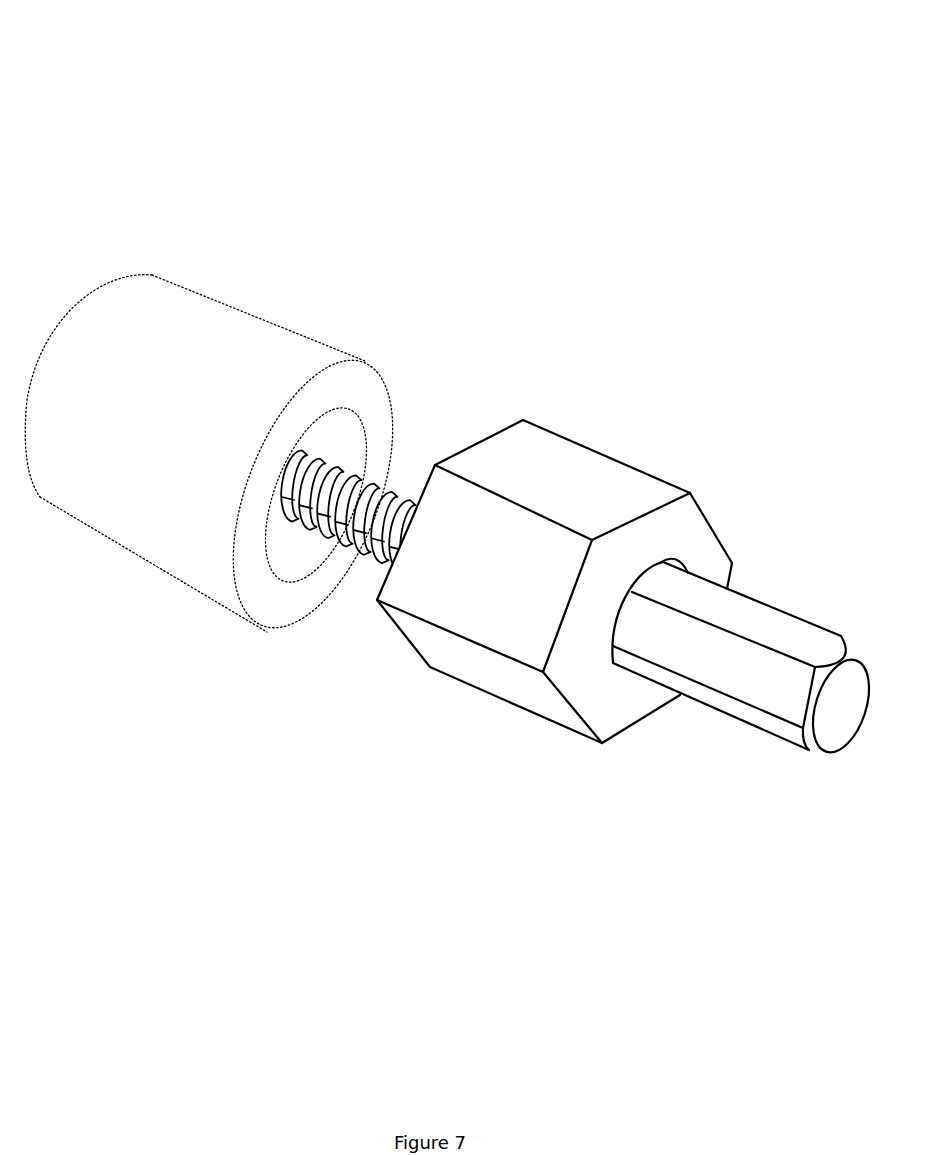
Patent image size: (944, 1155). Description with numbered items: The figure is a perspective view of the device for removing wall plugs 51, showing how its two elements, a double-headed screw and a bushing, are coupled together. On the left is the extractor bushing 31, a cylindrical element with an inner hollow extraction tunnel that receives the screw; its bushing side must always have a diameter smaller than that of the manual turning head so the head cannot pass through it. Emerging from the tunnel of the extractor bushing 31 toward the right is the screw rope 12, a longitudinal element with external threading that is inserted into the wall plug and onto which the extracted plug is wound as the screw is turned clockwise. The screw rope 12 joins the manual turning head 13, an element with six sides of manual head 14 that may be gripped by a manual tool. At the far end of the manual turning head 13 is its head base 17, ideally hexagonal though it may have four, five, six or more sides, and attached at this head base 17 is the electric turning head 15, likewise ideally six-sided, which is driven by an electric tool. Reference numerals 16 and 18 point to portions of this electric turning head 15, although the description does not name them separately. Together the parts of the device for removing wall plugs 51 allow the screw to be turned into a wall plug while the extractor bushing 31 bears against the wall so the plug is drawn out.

The device for removing wall plugs 51 is at (433, 260).
The extractor bushing 31 is at (230, 382).
The screw rope 12 is at (366, 546).
The manual turning head 13 is at (557, 417).
The sides of manual head 14 is at (628, 483).
The electric turning head 15 is at (760, 602).
The drive shaft 16 is at (820, 643).
The head base 17 is at (602, 698).
The end of drive shaft 18 is at (848, 708).